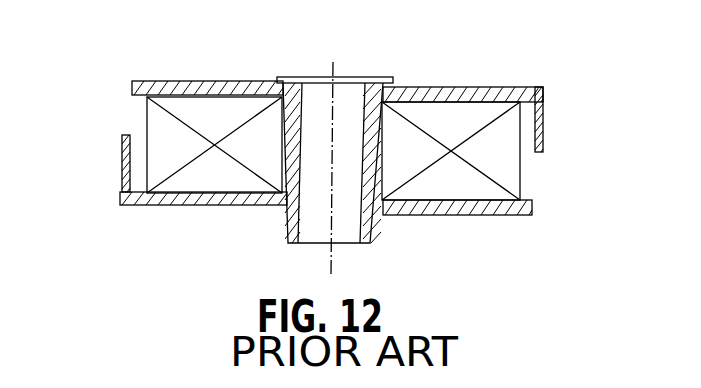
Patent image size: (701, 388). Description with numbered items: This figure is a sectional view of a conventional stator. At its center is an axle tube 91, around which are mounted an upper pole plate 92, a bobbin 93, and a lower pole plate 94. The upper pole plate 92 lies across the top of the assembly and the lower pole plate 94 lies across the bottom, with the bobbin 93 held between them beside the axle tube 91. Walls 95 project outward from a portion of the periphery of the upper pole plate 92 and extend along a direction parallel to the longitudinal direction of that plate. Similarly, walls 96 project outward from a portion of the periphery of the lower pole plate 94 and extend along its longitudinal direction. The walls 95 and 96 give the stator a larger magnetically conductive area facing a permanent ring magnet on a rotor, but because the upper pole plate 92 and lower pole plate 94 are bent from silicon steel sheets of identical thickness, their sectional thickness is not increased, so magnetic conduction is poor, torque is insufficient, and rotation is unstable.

The axle tube 91 is at (379, 80).
The upper pole plate 92 is at (513, 88).
The bobbin 93 is at (521, 181).
The lower pole plate 94 is at (207, 207).
The walls 95 is at (543, 128).
The walls 96 is at (122, 172).